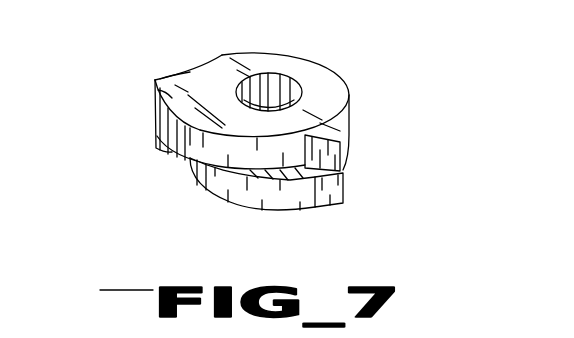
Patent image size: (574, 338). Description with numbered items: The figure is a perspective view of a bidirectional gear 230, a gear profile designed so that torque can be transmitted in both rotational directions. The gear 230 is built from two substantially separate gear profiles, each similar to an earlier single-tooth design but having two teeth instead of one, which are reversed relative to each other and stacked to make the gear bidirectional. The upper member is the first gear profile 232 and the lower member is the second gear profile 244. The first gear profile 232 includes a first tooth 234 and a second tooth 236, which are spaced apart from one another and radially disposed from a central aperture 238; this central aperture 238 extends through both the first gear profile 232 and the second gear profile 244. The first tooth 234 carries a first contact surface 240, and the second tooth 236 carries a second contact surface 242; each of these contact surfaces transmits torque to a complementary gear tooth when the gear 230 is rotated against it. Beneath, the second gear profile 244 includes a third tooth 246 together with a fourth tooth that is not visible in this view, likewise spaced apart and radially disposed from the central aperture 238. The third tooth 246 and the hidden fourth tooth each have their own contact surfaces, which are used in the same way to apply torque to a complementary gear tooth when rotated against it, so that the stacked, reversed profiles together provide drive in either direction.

The bidirectional gear 230 is at (372, 78).
The first gear profile 232 is at (158, 135).
The first tooth 234 is at (157, 83).
The second tooth 236 is at (340, 140).
The central aperture 238 is at (275, 87).
The first contact surface 240 is at (170, 78).
The second contact surface 242 is at (313, 178).
The second gear profile 244 is at (248, 193).
The third tooth 246 is at (346, 179).